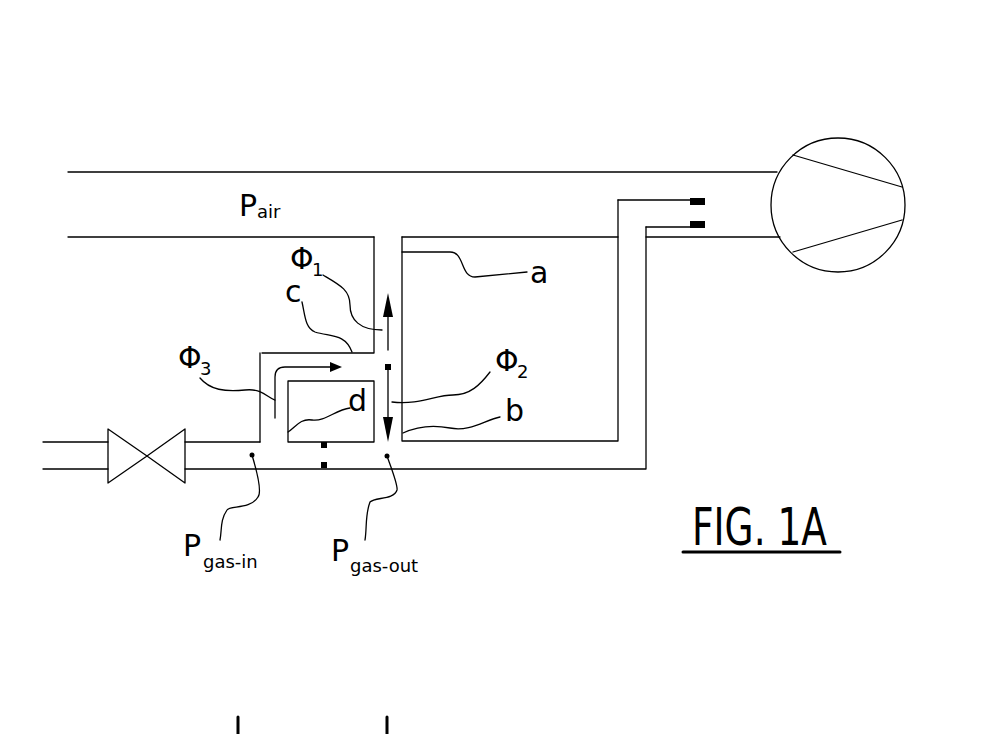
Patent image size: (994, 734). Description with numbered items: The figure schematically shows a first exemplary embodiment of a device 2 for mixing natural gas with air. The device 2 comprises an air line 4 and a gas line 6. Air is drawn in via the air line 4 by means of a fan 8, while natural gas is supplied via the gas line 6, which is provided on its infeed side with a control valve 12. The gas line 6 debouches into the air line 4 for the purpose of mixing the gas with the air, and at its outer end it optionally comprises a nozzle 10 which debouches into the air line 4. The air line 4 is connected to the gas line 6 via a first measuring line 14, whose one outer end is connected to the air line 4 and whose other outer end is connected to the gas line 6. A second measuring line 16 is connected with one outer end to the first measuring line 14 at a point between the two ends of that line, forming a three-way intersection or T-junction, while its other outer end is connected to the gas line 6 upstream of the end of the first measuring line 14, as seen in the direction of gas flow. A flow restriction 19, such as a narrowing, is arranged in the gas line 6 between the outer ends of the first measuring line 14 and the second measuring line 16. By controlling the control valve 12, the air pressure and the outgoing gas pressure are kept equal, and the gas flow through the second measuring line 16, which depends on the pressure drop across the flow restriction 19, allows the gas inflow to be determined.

The device 2 is at (596, 116).
The air line 4 is at (190, 172).
The gas line 6 is at (488, 468).
The fan 8 is at (843, 150).
The nozzle 10 is at (697, 193).
The control valve 12 is at (122, 450).
The first measuring line 14 is at (443, 330).
The second measuring line 16 is at (272, 352).
The flow restriction 19 is at (325, 469).